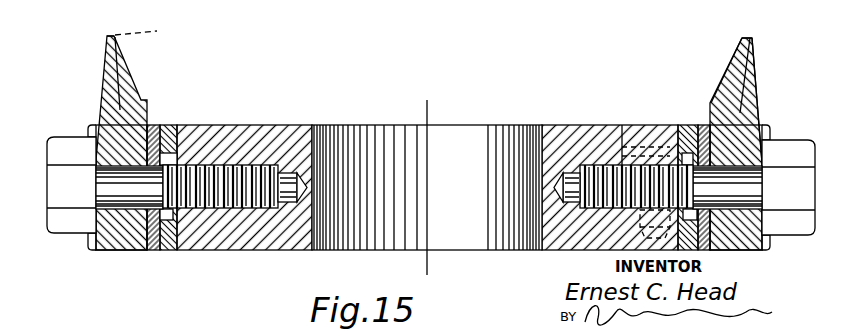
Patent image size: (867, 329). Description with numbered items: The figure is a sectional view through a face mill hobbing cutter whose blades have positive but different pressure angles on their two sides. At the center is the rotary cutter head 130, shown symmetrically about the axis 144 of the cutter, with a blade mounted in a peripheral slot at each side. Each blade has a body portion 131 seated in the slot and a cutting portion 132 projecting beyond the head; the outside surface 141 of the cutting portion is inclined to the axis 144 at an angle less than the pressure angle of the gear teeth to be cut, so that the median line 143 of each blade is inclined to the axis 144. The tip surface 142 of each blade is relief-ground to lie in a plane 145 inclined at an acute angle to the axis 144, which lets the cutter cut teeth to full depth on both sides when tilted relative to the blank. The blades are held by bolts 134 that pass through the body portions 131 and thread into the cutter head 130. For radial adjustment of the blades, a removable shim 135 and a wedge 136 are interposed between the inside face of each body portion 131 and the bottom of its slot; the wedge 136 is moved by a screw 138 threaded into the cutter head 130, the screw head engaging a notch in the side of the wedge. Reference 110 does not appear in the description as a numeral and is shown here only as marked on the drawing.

The clamping flange member 110 is at (730, 63).
The rotary cutter head 130 is at (282, 238).
The body portion 131 is at (132, 242).
The cutting portion 132 is at (752, 78).
The bolt 134 is at (72, 223).
The removable shim 135 is at (152, 123).
The wedge 136 is at (178, 125).
The screw 138 is at (632, 140).
The outside surface 141 is at (755, 53).
The tip surface 142 is at (107, 33).
The median line 143 is at (108, 36).
The axis 144 is at (428, 108).
The plane 145 is at (147, 31).